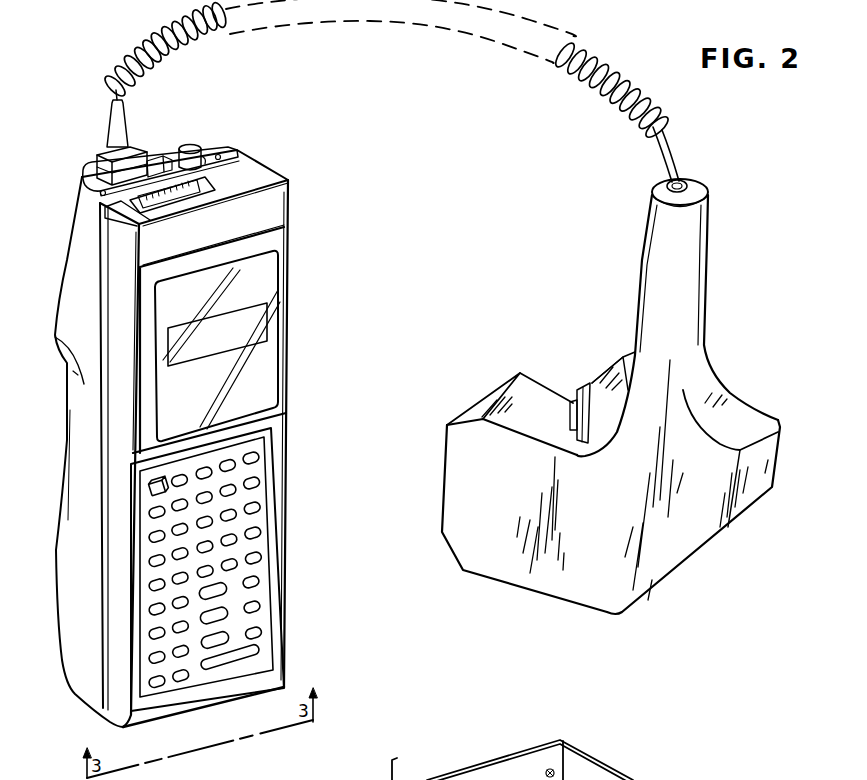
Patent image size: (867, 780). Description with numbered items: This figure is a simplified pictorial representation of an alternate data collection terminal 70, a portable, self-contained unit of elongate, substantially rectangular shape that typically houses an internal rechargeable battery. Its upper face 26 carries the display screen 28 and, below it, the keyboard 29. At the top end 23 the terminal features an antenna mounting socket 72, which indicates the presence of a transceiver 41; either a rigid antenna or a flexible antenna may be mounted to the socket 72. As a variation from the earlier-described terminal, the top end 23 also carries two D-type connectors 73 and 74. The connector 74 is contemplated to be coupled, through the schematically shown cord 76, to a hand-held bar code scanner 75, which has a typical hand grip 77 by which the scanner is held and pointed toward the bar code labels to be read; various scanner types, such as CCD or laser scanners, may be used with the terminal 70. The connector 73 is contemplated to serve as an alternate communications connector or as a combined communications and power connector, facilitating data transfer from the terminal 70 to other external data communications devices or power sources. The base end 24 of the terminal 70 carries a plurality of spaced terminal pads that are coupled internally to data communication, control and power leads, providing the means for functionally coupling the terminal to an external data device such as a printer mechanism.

The top end 23 is at (260, 174).
The base end 24 is at (193, 711).
The upper face 26 is at (287, 415).
The display screen 28 is at (232, 348).
The keyboard 29 is at (262, 470).
The transceiver 41 is at (167, 161).
The data collection terminal 70 is at (350, 298).
The antenna mounting socket 72 is at (190, 146).
The D-type connector 73 is at (133, 213).
The D-type connector 74 is at (100, 175).
The hand-held bar code scanner 75 is at (566, 325).
The cord 76 is at (139, 51).
The hand grip 77 is at (708, 290).